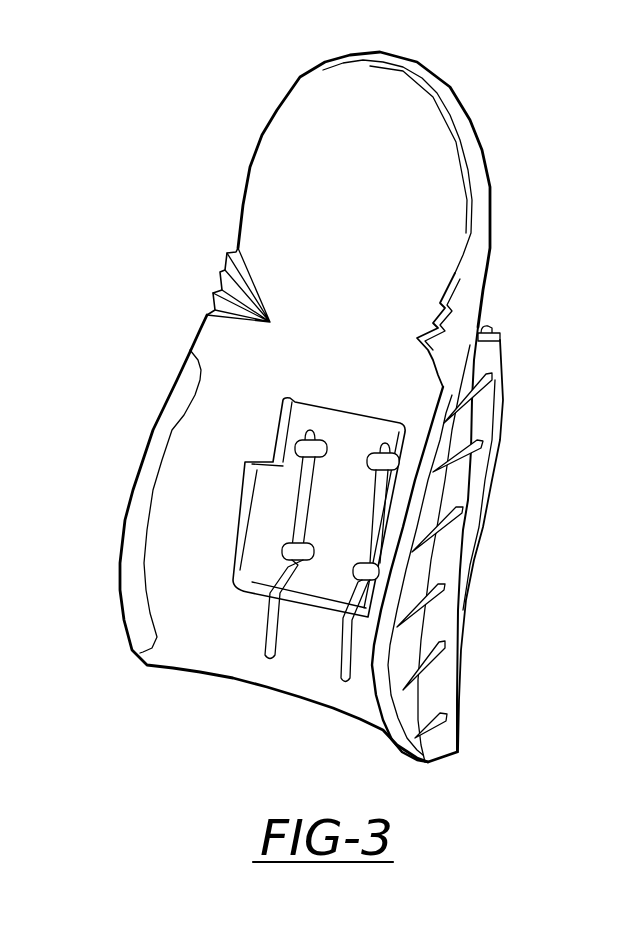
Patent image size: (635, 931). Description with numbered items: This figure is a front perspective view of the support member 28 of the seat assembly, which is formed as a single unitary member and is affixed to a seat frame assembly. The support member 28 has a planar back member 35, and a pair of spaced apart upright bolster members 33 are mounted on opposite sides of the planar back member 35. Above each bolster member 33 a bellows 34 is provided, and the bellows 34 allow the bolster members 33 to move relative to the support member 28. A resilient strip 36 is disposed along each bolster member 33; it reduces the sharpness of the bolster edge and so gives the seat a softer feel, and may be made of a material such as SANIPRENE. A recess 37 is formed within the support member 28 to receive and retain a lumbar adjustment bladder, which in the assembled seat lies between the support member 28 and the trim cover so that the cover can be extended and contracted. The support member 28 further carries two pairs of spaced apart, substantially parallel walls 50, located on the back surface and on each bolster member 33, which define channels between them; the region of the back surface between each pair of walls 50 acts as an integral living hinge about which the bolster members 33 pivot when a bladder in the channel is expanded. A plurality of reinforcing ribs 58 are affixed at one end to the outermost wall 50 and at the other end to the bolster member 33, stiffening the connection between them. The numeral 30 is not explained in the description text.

The support member 28 is at (493, 493).
The heel cup body 30 is at (313, 122).
The bolster member 33 is at (403, 645).
The bellows 34 is at (222, 272).
The planar back member 35 is at (373, 213).
The resilient strip 36 is at (155, 453).
The recess 37 is at (260, 530).
The walls 50 is at (483, 323).
The reinforcing ribs 58 is at (472, 457).